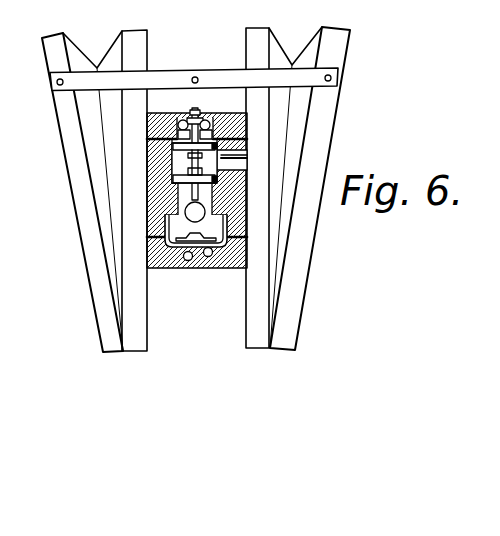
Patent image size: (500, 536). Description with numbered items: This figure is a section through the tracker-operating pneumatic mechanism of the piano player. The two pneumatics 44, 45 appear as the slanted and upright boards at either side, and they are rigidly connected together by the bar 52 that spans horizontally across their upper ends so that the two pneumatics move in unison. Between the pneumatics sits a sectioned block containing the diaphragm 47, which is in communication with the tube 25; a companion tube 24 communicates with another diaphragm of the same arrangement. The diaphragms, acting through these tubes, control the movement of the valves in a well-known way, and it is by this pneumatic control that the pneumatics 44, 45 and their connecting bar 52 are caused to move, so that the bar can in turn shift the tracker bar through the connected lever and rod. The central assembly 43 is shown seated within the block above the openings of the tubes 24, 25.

The tube 24 is at (187, 262).
The tube 25 is at (208, 258).
The valve stem assembly 43 is at (205, 167).
The pneumatic 44 is at (325, 105).
The pneumatic 45 is at (72, 92).
The diaphragm 47 is at (147, 268).
The bar 52 is at (170, 80).